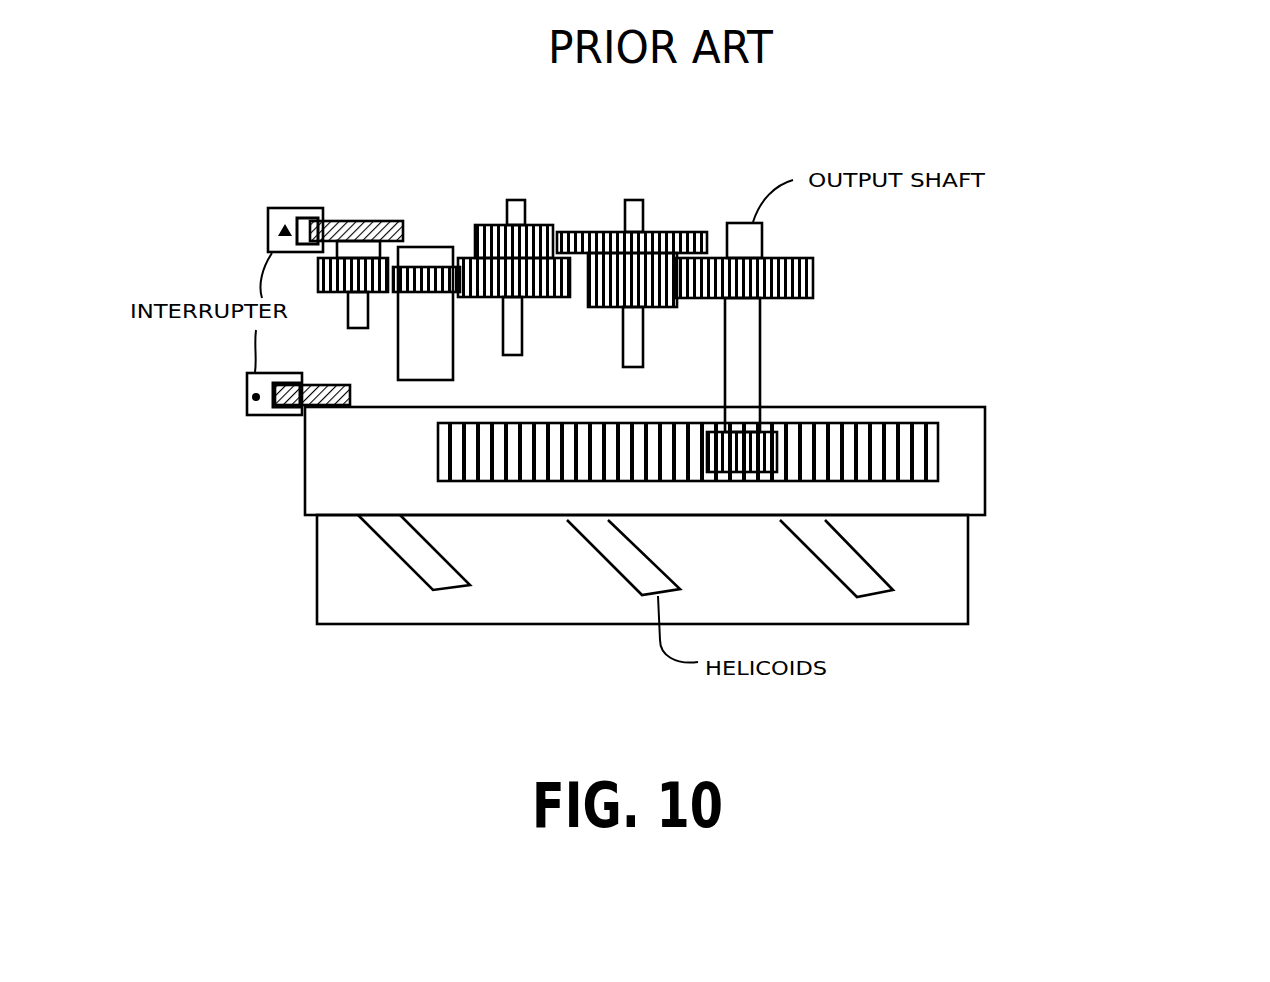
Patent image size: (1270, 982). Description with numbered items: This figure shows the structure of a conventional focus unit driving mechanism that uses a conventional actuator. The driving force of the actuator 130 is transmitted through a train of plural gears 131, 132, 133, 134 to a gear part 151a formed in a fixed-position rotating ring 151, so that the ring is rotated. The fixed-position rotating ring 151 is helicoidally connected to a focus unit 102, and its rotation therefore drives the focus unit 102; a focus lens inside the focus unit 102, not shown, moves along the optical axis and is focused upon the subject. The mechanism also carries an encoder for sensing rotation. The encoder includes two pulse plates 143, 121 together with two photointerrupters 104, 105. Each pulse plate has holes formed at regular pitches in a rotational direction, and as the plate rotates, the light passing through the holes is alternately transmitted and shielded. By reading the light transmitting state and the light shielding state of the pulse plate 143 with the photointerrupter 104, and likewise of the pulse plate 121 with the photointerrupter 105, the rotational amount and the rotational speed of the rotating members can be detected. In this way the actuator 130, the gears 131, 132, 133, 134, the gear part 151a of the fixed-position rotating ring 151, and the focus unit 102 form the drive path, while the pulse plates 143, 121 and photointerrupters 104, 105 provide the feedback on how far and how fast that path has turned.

The photointerrupter 104 is at (270, 207).
The pulse plate 143 is at (372, 222).
The actuator 130 is at (430, 248).
The gear 131 is at (428, 292).
The gear 132 is at (540, 298).
The gear 133 is at (660, 232).
The gear 134 is at (813, 278).
The fixed-position rotating ring 151 is at (792, 407).
The gear part 151a is at (938, 452).
The focus unit 102 is at (968, 578).
The photointerrupter 105 is at (248, 375).
The pulse plate 121 is at (320, 384).